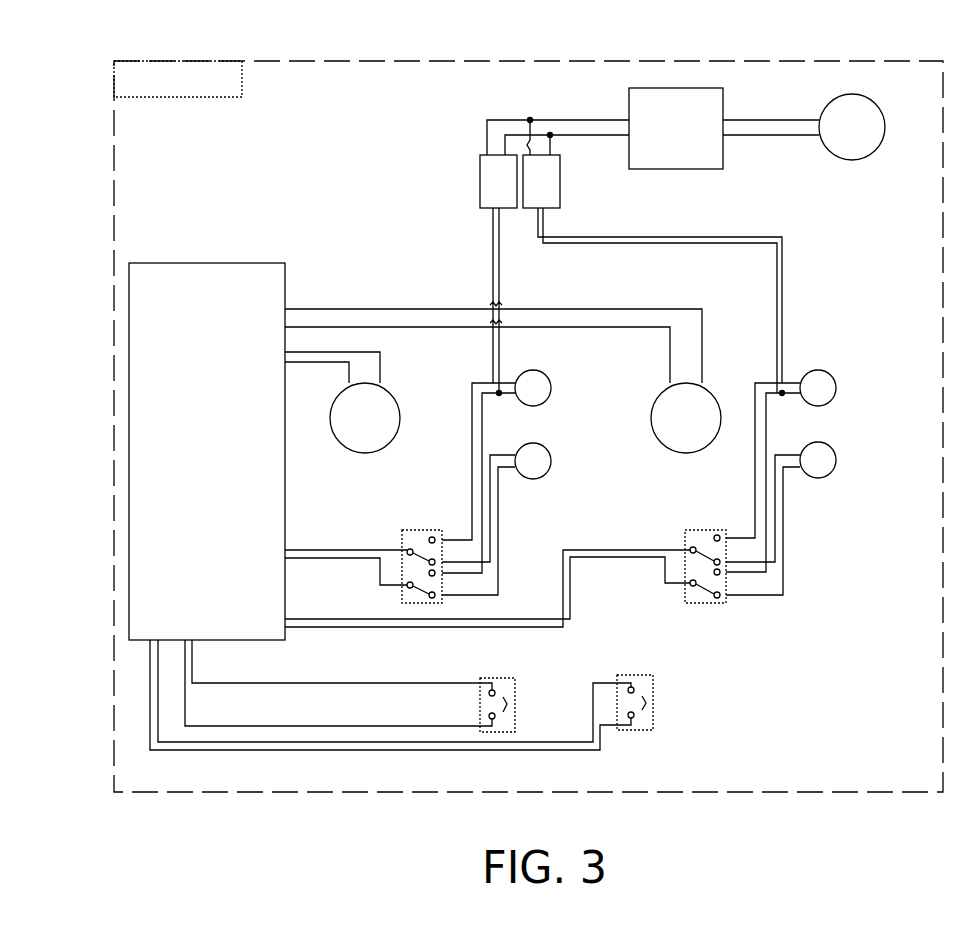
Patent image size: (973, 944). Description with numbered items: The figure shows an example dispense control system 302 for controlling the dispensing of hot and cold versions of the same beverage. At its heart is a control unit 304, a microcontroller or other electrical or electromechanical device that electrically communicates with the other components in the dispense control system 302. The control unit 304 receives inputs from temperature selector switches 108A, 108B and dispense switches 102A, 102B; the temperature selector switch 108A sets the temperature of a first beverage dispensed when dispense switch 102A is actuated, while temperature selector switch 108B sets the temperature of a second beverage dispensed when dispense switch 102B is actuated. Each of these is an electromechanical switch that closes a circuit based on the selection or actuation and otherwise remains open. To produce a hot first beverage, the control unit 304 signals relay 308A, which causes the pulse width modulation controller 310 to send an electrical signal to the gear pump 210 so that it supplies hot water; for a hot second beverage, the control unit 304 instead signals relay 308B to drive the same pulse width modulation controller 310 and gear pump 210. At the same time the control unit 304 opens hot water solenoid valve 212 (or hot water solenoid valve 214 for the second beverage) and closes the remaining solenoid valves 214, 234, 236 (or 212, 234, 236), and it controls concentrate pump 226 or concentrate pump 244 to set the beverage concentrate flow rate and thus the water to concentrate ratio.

The dispense control system 302 is at (218, 60).
The control unit 304 is at (200, 262).
The pulse width modulation (PWM) controller 310 is at (727, 108).
The gear pump 210 is at (882, 112).
The relay 308A is at (478, 180).
The relay 308B is at (562, 178).
The concentrate pump 226 is at (390, 397).
The concentrate pump 244 is at (712, 396).
The hot water solenoid valve 212 is at (545, 373).
The cold water solenoid valve 234 is at (548, 449).
The hot water solenoid valve 214 is at (832, 376).
The cold water solenoid valve 236 is at (832, 450).
The temperature selector switch 108A is at (420, 530).
The temperature selector switch 108B is at (705, 530).
The dispense switch 102A is at (515, 696).
The dispense switch 102B is at (653, 692).